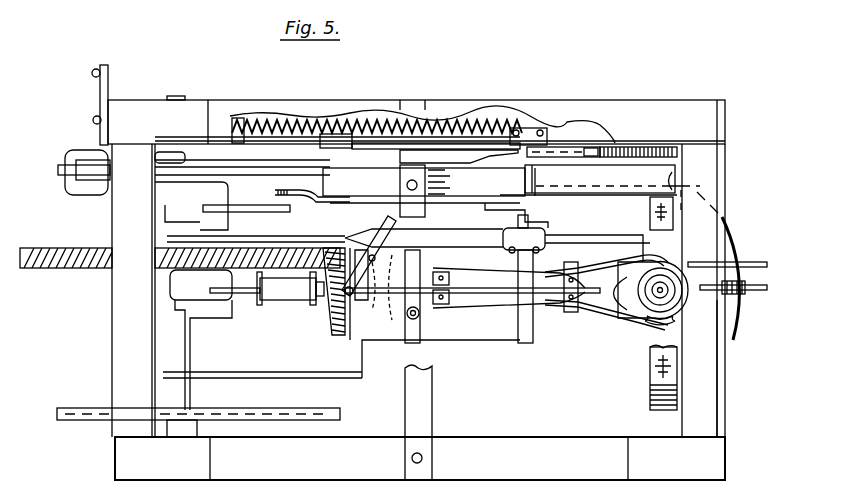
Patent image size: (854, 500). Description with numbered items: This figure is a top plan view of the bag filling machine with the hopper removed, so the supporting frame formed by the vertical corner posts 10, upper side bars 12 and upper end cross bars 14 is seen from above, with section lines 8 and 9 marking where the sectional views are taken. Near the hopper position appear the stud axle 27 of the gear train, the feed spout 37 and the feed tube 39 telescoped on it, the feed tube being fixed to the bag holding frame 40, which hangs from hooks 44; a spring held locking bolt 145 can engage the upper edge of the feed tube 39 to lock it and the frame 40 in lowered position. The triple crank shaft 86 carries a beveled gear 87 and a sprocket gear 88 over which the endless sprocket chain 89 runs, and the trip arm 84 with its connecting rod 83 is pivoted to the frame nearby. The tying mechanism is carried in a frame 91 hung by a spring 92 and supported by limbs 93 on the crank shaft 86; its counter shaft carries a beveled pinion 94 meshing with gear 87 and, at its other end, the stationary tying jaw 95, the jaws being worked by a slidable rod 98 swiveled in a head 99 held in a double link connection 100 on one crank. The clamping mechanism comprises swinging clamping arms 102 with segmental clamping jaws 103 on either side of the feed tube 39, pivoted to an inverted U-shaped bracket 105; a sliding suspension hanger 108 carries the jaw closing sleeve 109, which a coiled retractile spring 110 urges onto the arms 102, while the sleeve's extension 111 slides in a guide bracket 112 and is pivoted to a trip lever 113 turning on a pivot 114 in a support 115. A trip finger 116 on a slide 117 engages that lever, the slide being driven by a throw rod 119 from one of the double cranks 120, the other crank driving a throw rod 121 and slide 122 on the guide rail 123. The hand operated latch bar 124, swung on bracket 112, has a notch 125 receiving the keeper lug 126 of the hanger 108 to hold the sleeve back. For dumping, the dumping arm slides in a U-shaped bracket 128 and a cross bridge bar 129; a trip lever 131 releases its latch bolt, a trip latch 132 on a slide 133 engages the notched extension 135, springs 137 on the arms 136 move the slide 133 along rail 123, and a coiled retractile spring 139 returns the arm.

The vertical corner posts 10 is at (668, 107).
The upper side bars 12 is at (535, 476).
The upper end cross bars 14 is at (715, 400).
The section line 8— 8 is at (85, 200).
The section line 9— 9 is at (100, 143).
The stud axle 27 is at (735, 233).
The feed spout 37 is at (673, 304).
The feed tube 39 is at (683, 282).
The bag holding frame 40 is at (650, 400).
The hooks 44 is at (680, 366).
The connecting rod 83 is at (92, 73).
The trip arm 84 is at (96, 98).
The triple crank shaft 86 is at (180, 338).
The beveled gear 87 is at (85, 272).
The sprocket gear 88 is at (240, 404).
The endless sprocket chain 89 is at (302, 412).
The frame 91 is at (487, 325).
The spring 92 is at (396, 348).
The limbs 93 is at (257, 236).
The beveled pinion 94 is at (338, 334).
The stationary tying jaw 95 is at (636, 322).
The slidable rod 98 is at (323, 318).
The head 99 is at (310, 305).
The double link connection 100 is at (266, 305).
The swinging clamping arms 102 is at (585, 262).
The segmental-shaped clamping jaws 103 is at (676, 255).
The inverted U-shaped bracket 105 is at (525, 345).
The sliding suspension hanger 108 is at (480, 305).
The jaw closing sleeve 109 is at (560, 315).
The coiled retractile spring 110 is at (622, 240).
The extension 111 is at (396, 345).
The guide bracket 112 is at (420, 332).
The trip lever 113 is at (375, 215).
The pivot 114 is at (390, 245).
The support 115 is at (383, 296).
The trip finger 116 is at (339, 223).
The slide 117 is at (540, 232).
The throw rod 119 is at (307, 223).
The double cranks 120 is at (222, 190).
The throw rod 121 is at (276, 191).
The slide 122 is at (328, 134).
The guide rail 123 is at (262, 118).
The hand operated latch bar 124 is at (768, 250).
The notch 125 is at (605, 334).
The keeper lug 126 is at (600, 330).
The U-shaped bracket 128 is at (632, 175).
The cross bridge bar 129 is at (420, 411).
The trip lever 131 is at (324, 190).
The trip latch 132 is at (440, 150).
The slide 133 is at (525, 128).
The extension 135 is at (535, 182).
The arms 136 is at (556, 100).
The coiled retractile springs 137 is at (380, 120).
The coiled retractile spring 139 is at (668, 145).
The spring held locking bolt 145 is at (747, 299).